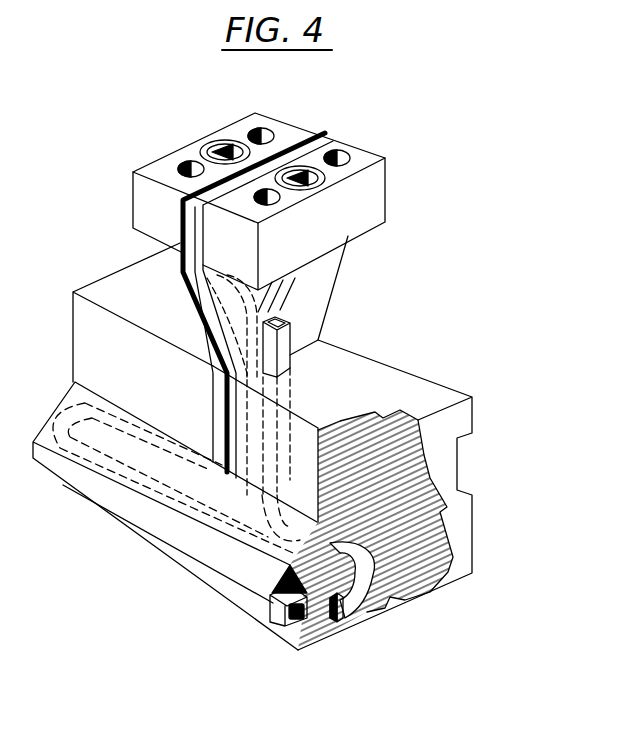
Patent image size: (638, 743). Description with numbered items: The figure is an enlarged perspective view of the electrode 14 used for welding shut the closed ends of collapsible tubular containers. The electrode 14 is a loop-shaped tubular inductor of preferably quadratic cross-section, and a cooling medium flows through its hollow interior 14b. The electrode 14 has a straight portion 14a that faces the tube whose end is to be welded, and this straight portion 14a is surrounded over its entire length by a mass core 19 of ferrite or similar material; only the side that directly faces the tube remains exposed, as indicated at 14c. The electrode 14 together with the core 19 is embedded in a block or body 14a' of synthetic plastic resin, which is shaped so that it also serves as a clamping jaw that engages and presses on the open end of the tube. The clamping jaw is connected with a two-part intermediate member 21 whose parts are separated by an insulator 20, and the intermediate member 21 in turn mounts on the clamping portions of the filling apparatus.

The electrode 14 is at (278, 620).
The straight portion 14a is at (349, 469).
The block or body of synthetic plastic resin material 14a' is at (423, 530).
The hollow interior 14b is at (297, 612).
The exposed side 14c is at (132, 537).
The mass core 19 is at (240, 607).
The insulator 20 is at (325, 133).
The two-part intermediate member 21 is at (323, 277).